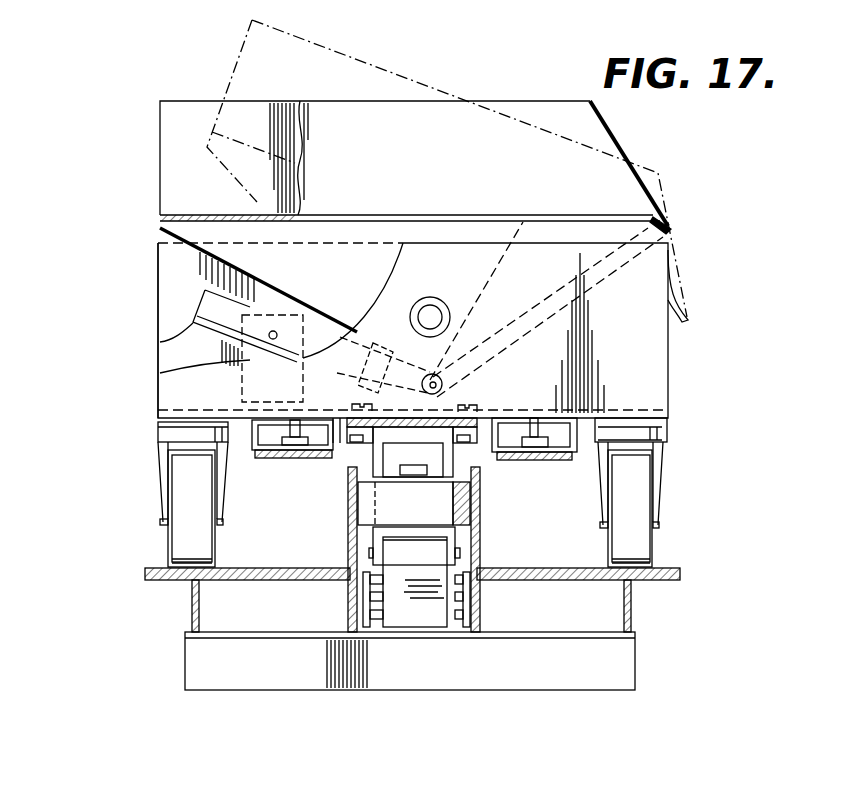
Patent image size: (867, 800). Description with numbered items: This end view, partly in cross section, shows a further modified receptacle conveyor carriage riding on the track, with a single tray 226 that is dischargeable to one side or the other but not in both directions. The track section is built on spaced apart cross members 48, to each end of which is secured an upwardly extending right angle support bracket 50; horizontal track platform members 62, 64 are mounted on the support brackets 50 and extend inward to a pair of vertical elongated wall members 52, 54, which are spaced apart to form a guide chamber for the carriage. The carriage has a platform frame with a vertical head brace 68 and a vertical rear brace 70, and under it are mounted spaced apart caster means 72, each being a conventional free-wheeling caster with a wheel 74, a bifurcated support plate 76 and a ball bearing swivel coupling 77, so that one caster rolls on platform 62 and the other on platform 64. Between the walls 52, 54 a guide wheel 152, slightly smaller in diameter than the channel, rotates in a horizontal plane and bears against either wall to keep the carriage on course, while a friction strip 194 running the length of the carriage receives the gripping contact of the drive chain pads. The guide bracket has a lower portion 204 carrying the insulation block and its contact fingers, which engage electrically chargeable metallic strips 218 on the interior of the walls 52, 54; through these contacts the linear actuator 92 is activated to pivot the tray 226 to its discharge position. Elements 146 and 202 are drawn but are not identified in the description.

The single tray 226 is at (590, 125).
The vertical rear brace 70 is at (650, 378).
The vertical head brace 68 is at (170, 268).
The linear actuator 92 is at (160, 338).
The ball bearing swivel coupling 77 is at (160, 423).
The bifurcated support plate 76 is at (160, 470).
The caster means 72 is at (157, 530).
The wheel 74 is at (198, 545).
The horizontal track platform member 64 is at (150, 565).
The horizontal track platform member 62 is at (667, 565).
The right angle support bracket 50 is at (193, 608).
The cross member 48 is at (202, 660).
The vertical elongated wall member 54 is at (347, 550).
The vertical elongated wall member 52 is at (480, 555).
The coupling structure 146 is at (366, 448).
The guide wheel 152 is at (414, 503).
The friction strip 194 is at (258, 461).
The lower portion 204 is at (448, 540).
The body 202 is at (431, 640).
The electrically chargeable metallic strip 218 is at (372, 600).